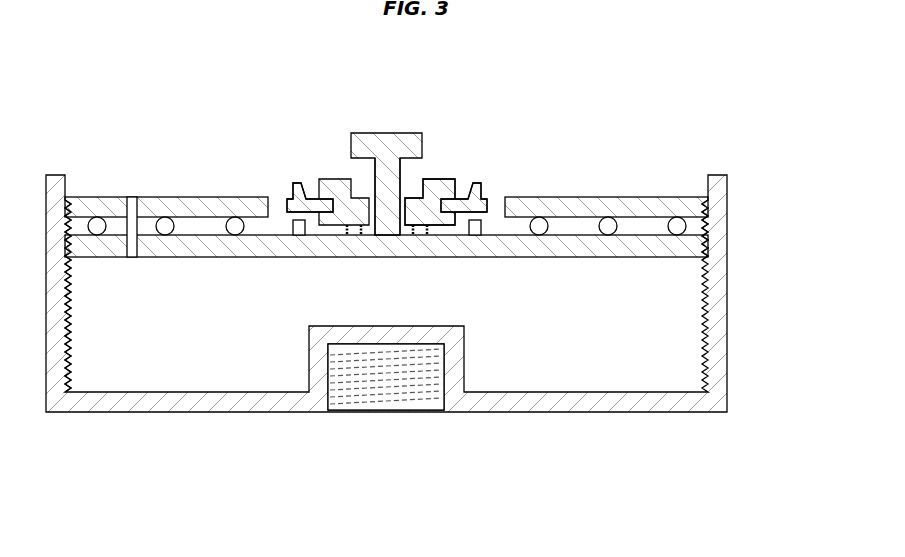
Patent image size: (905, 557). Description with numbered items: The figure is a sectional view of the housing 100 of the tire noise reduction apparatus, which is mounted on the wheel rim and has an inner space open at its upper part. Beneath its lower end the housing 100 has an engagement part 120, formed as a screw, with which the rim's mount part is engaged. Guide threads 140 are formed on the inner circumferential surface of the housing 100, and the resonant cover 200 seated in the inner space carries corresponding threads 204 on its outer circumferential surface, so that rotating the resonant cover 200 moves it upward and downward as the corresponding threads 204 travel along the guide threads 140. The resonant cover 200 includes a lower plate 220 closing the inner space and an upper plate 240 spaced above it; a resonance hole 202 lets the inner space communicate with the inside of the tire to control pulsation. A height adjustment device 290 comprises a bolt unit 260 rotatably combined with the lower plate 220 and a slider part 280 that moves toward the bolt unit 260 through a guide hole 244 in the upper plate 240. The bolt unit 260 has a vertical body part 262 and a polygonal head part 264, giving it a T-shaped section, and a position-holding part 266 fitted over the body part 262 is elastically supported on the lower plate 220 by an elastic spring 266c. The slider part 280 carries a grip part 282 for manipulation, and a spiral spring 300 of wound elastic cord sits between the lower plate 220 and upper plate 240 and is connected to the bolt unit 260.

The housing 100 is at (628, 412).
The engagement part 120 is at (387, 392).
The guide threads 140 is at (67, 363).
The resonant cover 200 is at (166, 158).
The resonance hole 202 is at (132, 197).
The corresponding threads 204 is at (705, 245).
The lower plate 220 is at (662, 250).
The upper plate 240 is at (620, 197).
The guide hole 244 is at (495, 198).
The bolt unit 260 is at (376, 146).
The body part 262 is at (373, 182).
The head part 264 is at (370, 138).
The position-holding part 266 is at (330, 178).
The elastic spring 266c is at (412, 198).
The slider part 280 is at (274, 318).
The grip part 282 is at (288, 188).
The height adjustment device 290 is at (458, 171).
The spiral spring 300 is at (675, 218).